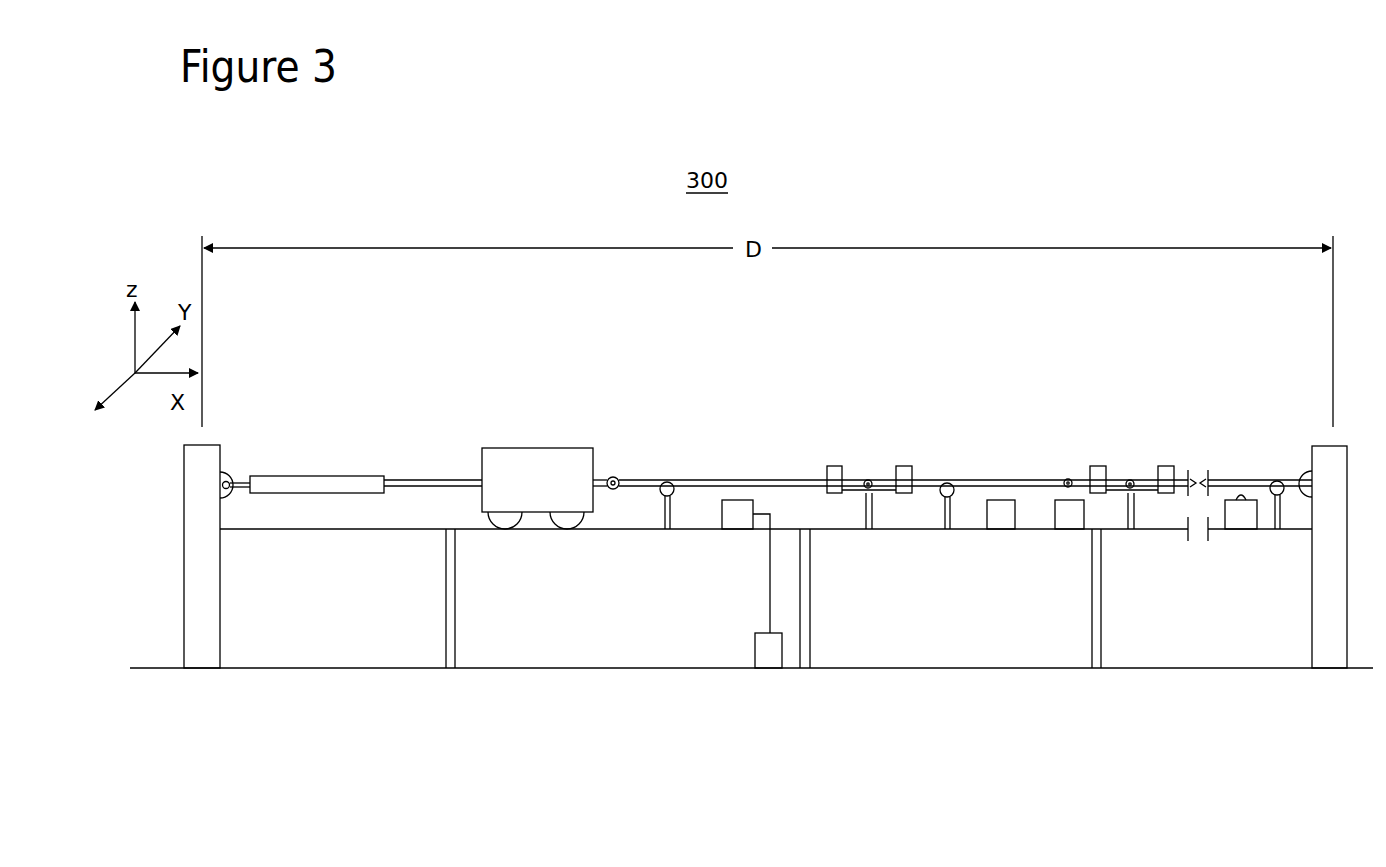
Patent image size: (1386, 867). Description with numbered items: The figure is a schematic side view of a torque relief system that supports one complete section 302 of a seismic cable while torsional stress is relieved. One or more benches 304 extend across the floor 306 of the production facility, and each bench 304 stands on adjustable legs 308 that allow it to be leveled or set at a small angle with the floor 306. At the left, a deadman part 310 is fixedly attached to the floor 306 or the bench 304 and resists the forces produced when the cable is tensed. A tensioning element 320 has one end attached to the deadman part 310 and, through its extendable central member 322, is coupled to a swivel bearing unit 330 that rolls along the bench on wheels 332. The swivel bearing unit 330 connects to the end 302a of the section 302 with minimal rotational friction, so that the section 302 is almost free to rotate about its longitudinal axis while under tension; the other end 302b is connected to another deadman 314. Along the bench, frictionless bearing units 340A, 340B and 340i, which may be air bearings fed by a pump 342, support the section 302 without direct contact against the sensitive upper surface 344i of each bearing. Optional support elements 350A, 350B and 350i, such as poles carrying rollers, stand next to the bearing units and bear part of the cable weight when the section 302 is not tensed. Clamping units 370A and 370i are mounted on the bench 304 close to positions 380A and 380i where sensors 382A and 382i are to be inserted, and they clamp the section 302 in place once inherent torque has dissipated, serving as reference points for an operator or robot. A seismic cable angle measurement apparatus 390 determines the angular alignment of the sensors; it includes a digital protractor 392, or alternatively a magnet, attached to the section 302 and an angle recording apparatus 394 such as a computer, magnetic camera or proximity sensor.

The section 302 is at (792, 478).
The end of section 302a is at (633, 478).
The other end of section 302b is at (1287, 478).
The bench 304 is at (385, 531).
The floor 306 is at (548, 670).
The adjustable legs 308 is at (457, 605).
The deadman part 310 is at (181, 558).
The deadman 314 is at (1323, 446).
The tensioning element 320 is at (310, 475).
The central member 322 is at (401, 479).
The swivel bearing unit 330 is at (527, 448).
The wheels 332 is at (505, 527).
The frictionless bearing unit 340A is at (722, 512).
The frictionless bearing unit 340B is at (987, 517).
The frictionless bearing unit 340i is at (1245, 522).
The pump 342 is at (756, 650).
The upper surface 344i is at (1239, 497).
The support element 350A is at (663, 508).
The support element 350B is at (945, 500).
The support element 350i is at (1278, 518).
The clamping unit 370A is at (840, 510).
The clamping unit 370i is at (1141, 512).
The position 380A is at (863, 460).
The position 380i is at (1120, 460).
The sensor 382A is at (860, 478).
The sensor 382i is at (1135, 478).
The seismic cable angle measurement apparatus 390 is at (1038, 713).
The digital protractor 392 is at (1066, 478).
The angle recording apparatus 394 is at (1062, 518).